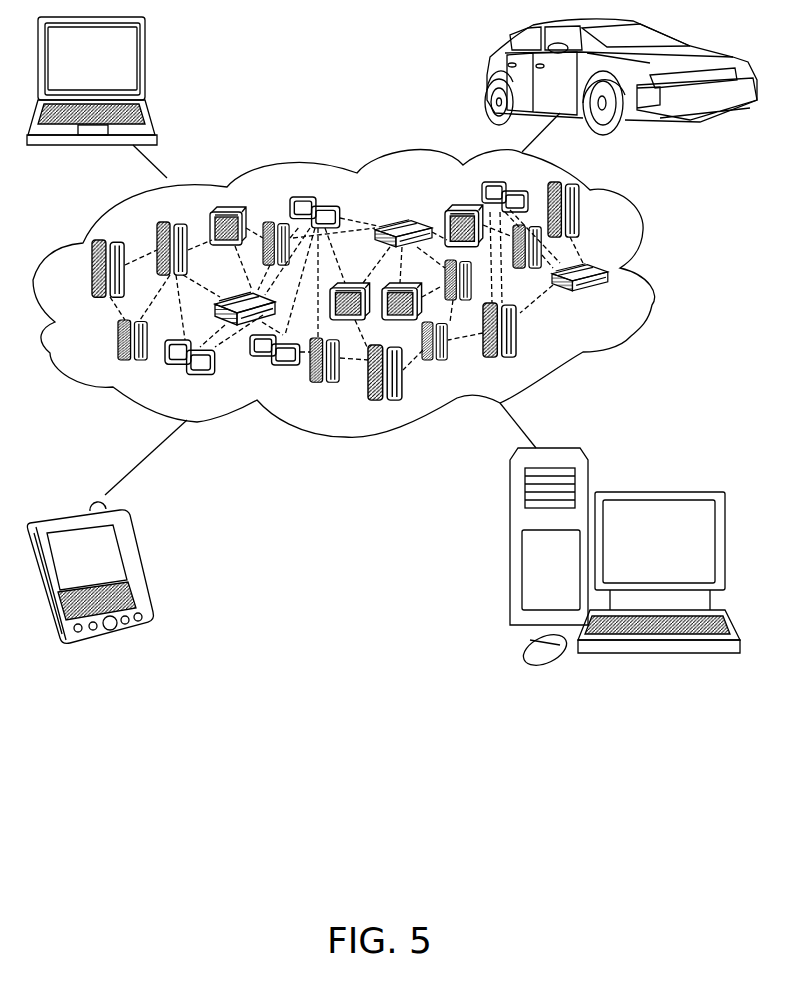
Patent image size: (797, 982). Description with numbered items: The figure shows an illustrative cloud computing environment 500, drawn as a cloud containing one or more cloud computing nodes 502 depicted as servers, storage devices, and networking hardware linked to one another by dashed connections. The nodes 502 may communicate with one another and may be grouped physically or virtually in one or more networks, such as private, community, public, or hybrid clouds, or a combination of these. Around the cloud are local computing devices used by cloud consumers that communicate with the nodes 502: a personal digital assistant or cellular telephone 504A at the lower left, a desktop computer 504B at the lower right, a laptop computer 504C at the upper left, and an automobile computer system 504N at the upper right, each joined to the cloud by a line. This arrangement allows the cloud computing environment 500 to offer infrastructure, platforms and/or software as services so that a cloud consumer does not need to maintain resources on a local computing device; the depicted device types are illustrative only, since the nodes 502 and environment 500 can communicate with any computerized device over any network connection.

The cloud computing environment 500 is at (617, 270).
The cloud computing nodes 502 is at (612, 297).
The personal digital assistant or cellular telephone 504A is at (130, 540).
The desktop computer 504B is at (648, 492).
The laptop computer 504C is at (145, 47).
The automobile computer system 504N is at (490, 80).